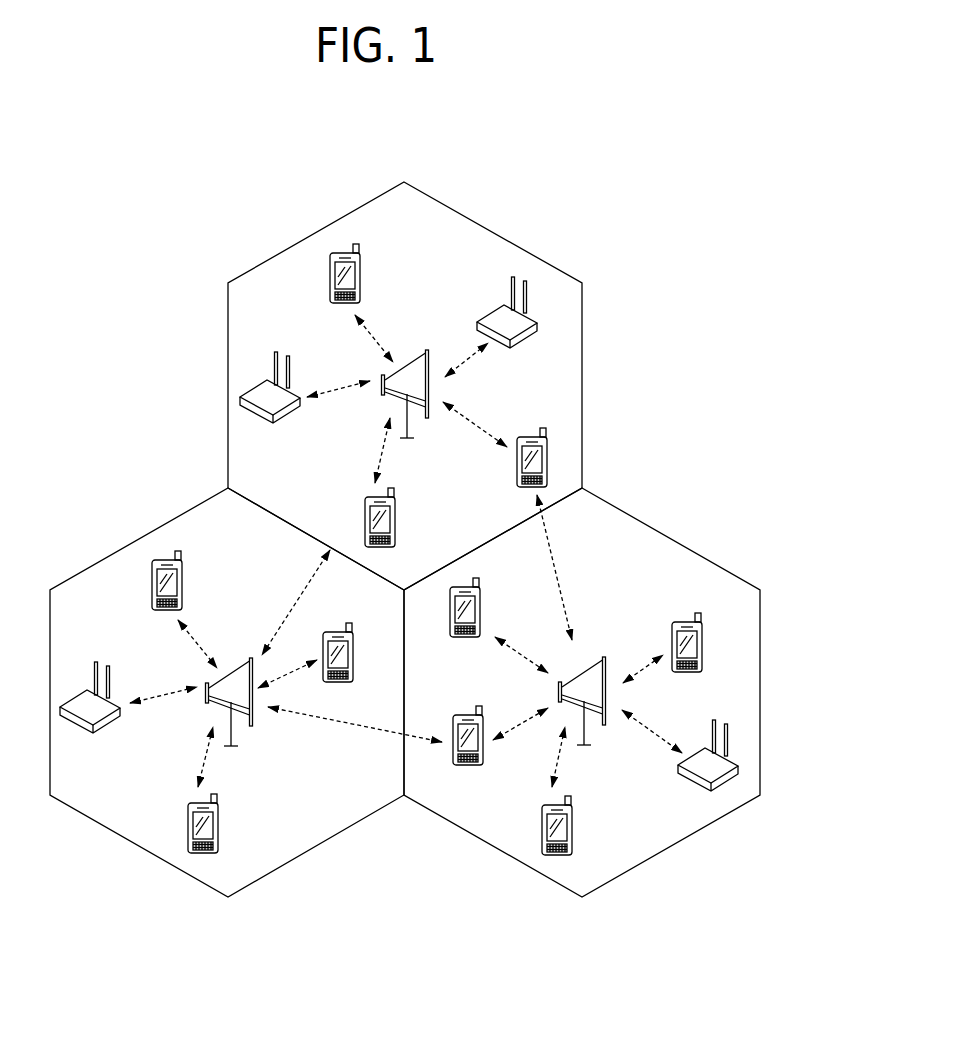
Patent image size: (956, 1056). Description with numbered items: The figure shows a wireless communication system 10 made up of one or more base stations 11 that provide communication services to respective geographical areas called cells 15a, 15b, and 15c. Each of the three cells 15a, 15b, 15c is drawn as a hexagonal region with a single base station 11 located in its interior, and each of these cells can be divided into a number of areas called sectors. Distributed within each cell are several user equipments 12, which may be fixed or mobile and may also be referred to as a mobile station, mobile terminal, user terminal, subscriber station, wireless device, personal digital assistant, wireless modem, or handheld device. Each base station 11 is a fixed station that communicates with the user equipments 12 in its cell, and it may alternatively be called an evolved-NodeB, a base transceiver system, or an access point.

The wireless communication system 10 is at (657, 287).
The base station 11 is at (418, 364).
The user equipment 12 is at (357, 277).
The cell 15a is at (582, 373).
The cell 15b is at (693, 548).
The cell 15c is at (113, 548).